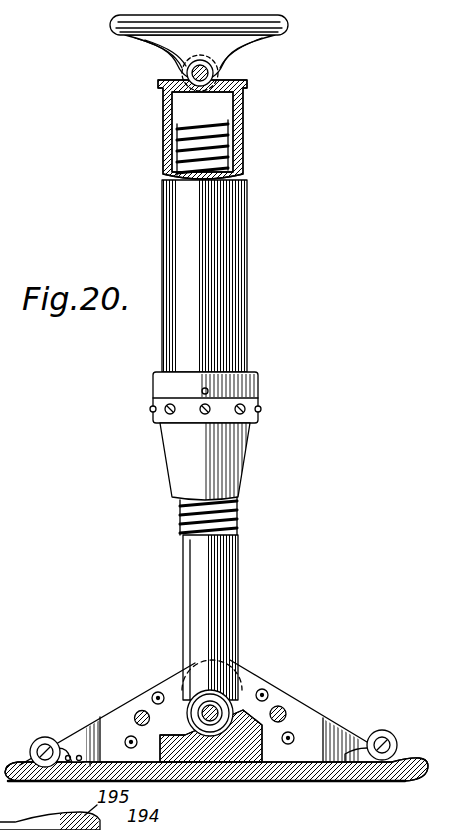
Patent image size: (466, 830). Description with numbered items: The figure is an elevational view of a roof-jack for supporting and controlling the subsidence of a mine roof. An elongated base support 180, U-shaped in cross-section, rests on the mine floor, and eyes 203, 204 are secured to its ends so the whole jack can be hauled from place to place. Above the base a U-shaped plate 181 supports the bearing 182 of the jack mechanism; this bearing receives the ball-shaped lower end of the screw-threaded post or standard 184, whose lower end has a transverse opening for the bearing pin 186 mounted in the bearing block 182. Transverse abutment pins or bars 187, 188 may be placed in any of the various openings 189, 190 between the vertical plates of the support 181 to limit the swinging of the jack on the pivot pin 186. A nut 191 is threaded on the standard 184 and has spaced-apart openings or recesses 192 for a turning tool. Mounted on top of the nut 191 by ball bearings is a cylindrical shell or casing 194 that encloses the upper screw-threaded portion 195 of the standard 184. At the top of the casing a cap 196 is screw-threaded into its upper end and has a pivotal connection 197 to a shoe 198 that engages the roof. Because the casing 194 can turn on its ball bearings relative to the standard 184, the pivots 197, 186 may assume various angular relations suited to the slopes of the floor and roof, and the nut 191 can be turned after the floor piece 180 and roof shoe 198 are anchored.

The base support 180 is at (337, 732).
The U-shaped plate 181 is at (246, 680).
The bearing 182 is at (243, 754).
The screw-threaded post or standard 184 is at (240, 581).
The bearing pin 186 is at (203, 706).
The transverse abutment pin 187 is at (135, 712).
The transverse abutment pin 188 is at (283, 708).
The openings 189 is at (152, 694).
The openings 190 is at (267, 690).
The nut 191 is at (183, 462).
The openings or recesses 192 is at (160, 408).
The cylindrical shell or casing 194 is at (247, 237).
The upper screw-threaded portion 195 is at (172, 144).
The cap 196 is at (168, 102).
The pivotal connection 197 is at (186, 73).
The shoe 198 is at (120, 23).
The eye 203 is at (42, 740).
The eye 204 is at (380, 742).